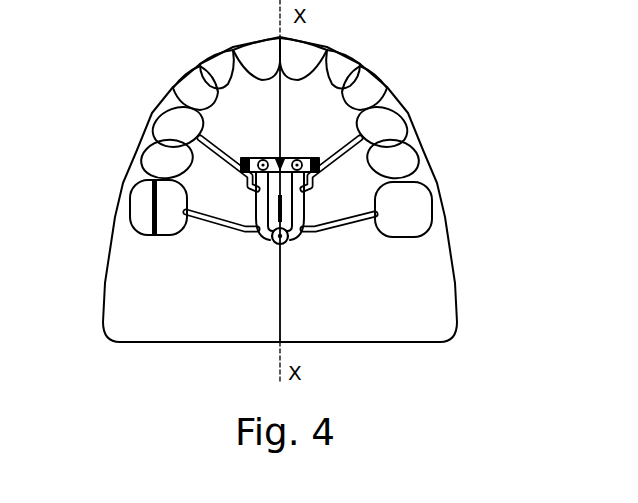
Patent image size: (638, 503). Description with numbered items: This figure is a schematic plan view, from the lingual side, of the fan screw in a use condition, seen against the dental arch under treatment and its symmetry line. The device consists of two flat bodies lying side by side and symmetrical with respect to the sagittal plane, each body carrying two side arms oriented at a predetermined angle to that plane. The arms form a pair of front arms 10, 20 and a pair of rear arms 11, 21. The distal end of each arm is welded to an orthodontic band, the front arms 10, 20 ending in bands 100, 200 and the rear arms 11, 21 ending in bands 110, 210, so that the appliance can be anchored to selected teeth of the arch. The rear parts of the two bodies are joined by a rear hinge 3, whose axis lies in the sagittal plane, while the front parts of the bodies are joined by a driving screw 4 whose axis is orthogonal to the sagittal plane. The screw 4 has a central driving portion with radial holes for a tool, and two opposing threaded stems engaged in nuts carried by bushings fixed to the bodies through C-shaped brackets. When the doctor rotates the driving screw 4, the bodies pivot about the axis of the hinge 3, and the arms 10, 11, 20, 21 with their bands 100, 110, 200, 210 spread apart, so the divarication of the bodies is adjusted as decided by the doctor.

The orthodontic band 100 is at (161, 183).
The orthodontic band 200 is at (412, 160).
The orthodontic band 110 is at (138, 232).
The orthodontic band 210 is at (427, 233).
The side arm 10 is at (213, 149).
The side arm 20 is at (337, 158).
The side arm 11 is at (205, 228).
The side arm 21 is at (342, 225).
The rear hinge 3 is at (275, 244).
The driving screw 4 is at (289, 156).